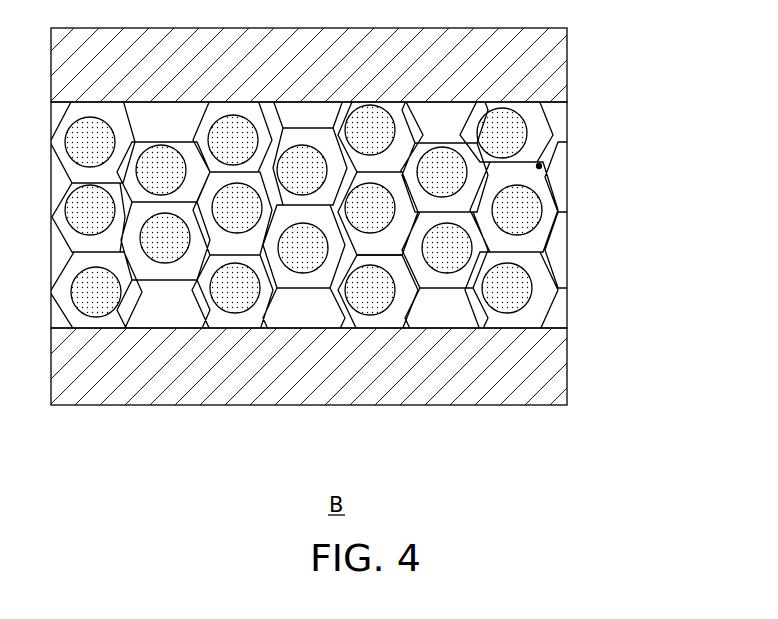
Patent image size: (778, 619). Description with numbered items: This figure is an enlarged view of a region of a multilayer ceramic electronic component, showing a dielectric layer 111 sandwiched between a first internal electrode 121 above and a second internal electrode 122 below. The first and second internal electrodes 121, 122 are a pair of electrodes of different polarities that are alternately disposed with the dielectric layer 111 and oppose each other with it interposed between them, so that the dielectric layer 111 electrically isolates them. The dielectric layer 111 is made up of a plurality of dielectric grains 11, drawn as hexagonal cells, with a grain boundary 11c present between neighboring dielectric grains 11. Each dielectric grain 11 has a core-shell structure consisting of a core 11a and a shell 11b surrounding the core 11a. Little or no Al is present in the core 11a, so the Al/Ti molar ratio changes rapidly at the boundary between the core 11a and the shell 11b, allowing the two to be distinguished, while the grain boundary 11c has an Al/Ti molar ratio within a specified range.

The first internal electrode 121 is at (557, 62).
The second internal electrode 122 is at (557, 363).
The dielectric layer 111 is at (378, 282).
The dielectric grain 11 is at (405, 380).
The core 11a is at (380, 303).
The shell 11b is at (407, 295).
The grain boundary 11c is at (590, 167).